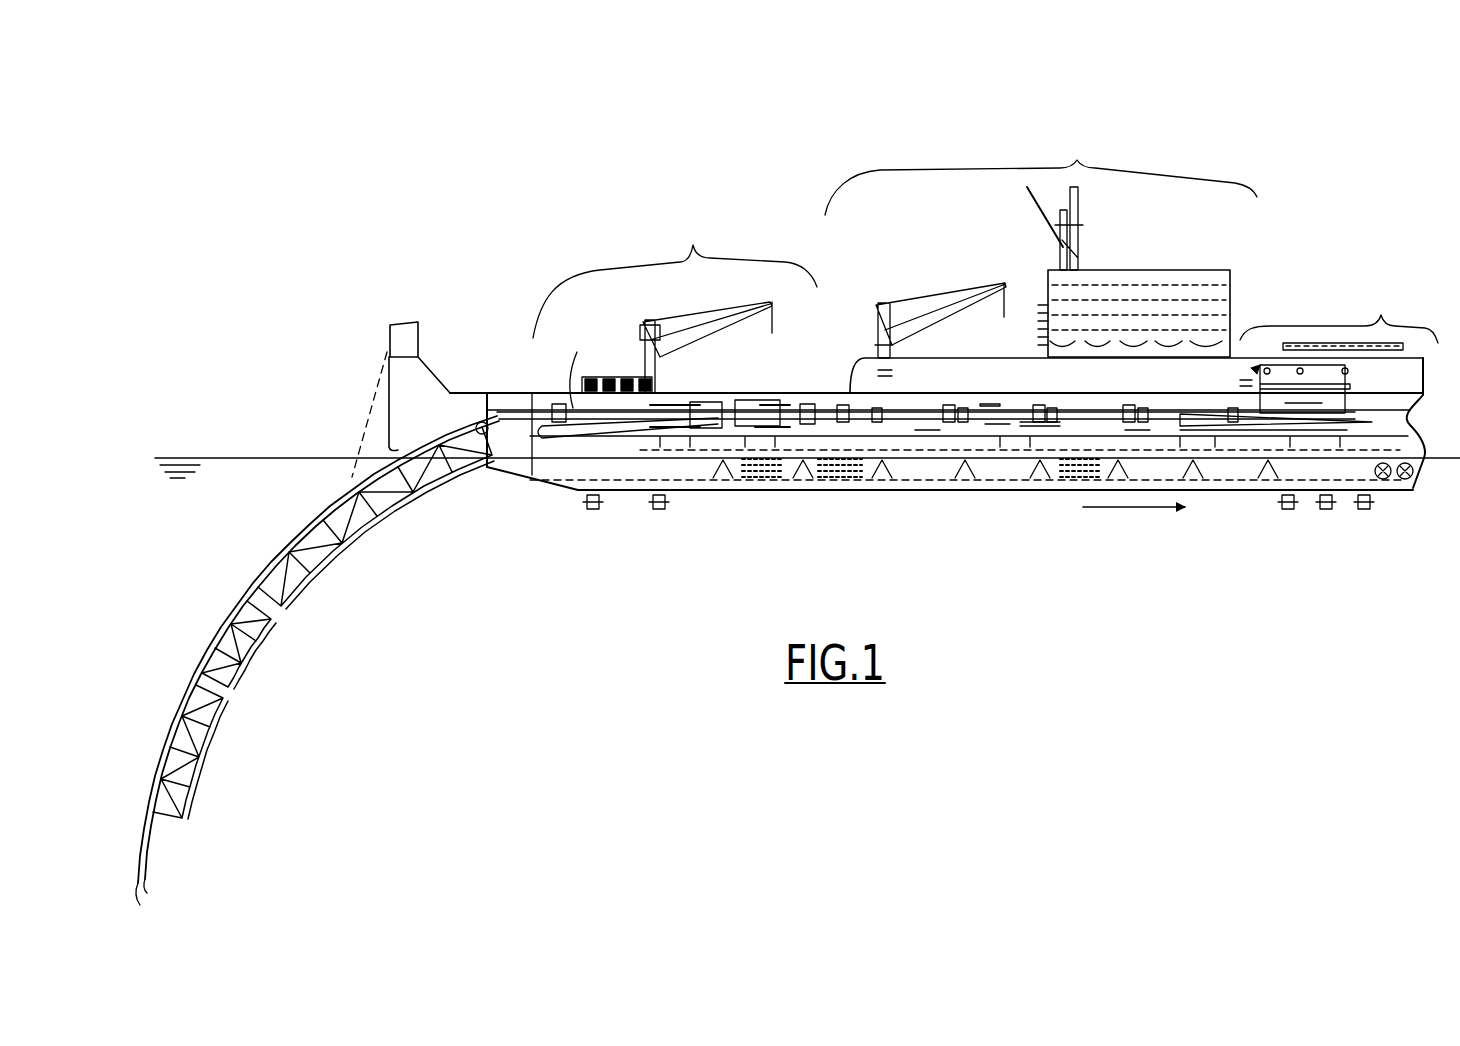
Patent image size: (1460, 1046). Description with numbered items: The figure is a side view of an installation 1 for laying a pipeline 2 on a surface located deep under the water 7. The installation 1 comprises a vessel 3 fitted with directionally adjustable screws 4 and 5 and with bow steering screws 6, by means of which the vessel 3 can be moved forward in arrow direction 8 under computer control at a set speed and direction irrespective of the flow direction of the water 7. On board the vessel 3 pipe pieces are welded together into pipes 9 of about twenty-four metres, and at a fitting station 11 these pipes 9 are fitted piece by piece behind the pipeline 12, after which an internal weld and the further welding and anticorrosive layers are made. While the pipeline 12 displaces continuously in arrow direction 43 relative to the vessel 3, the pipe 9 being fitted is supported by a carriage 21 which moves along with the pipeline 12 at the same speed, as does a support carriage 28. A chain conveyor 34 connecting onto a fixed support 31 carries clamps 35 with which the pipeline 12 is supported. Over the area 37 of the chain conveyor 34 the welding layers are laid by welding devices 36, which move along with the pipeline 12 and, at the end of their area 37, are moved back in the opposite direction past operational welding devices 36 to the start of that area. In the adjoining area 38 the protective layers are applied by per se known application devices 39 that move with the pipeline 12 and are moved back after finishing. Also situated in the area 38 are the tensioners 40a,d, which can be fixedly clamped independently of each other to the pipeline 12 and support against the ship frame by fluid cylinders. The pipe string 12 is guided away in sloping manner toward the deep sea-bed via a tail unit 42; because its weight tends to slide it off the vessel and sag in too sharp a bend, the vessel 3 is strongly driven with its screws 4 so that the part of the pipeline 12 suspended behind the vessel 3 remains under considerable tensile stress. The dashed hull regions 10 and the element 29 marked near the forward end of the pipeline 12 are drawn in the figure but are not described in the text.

The installation 1 is at (1336, 283).
The pipeline 2 is at (147, 873).
The vessel 3 is at (997, 490).
The directionally adjustable screws 4 is at (657, 510).
The directionally adjustable screws 5 is at (1365, 510).
The bow steering screws 6 is at (1405, 480).
The water 7 is at (272, 470).
The arrow direction 8 is at (1138, 510).
The pipes 9 is at (1355, 408).
The ballast tanks 10 is at (770, 477).
The fitting station 11 is at (1339, 316).
The pipeline 12 is at (803, 407).
The carriage 21 is at (1318, 430).
The support carriage 28 is at (925, 432).
The tensioner 29 is at (558, 398).
The fixed support 31 is at (1257, 393).
The chain conveyor 34 is at (1033, 424).
The clamps 35 is at (877, 407).
The welding devices 36 is at (843, 404).
The area 37 is at (1041, 247).
The area 38 is at (675, 302).
The application devices 39 is at (617, 427).
The tensioners 40a,d is at (737, 380).
The tail unit 42 is at (270, 653).
The arrow direction 43 is at (1020, 372).